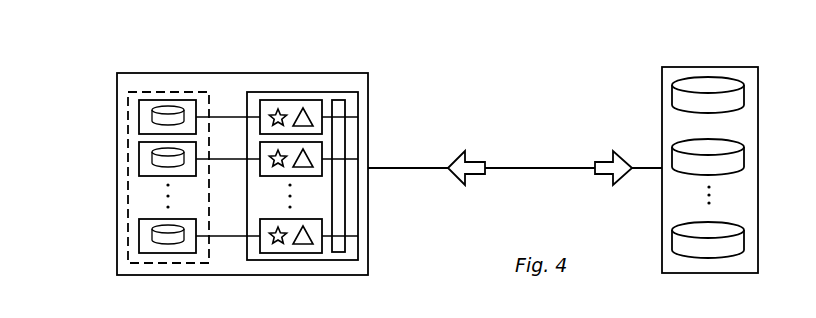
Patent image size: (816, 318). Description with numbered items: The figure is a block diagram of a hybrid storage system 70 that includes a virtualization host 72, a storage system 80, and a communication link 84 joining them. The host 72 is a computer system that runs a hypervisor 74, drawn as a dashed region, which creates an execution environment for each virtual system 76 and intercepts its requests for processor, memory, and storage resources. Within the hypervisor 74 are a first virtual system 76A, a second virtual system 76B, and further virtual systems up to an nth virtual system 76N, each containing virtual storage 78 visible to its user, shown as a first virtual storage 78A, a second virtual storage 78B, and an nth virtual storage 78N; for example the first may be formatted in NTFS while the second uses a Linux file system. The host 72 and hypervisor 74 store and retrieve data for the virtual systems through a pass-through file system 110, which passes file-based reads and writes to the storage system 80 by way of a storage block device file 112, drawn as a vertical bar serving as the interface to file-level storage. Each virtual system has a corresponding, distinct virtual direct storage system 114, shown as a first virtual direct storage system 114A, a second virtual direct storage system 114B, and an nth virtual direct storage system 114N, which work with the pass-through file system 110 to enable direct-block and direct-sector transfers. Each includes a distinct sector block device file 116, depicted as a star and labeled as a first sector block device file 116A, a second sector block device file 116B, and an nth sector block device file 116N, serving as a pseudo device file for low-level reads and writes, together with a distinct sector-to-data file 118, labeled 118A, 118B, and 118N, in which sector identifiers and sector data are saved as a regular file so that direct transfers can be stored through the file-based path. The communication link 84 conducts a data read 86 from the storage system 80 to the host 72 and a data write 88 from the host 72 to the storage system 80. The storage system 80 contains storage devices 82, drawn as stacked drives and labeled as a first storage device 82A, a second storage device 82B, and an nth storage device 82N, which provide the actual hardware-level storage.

The hybrid storage system 70 is at (94, 61).
The virtualization host 72 is at (161, 73).
The hypervisor 74 is at (167, 92).
The virtual system 76 is at (139, 102).
The first virtual system 76A is at (139, 113).
The second virtual system 76B is at (139, 145).
The nth virtual system 76N is at (139, 223).
The virtual storage 78 is at (150, 118).
The first virtual storage 78A is at (152, 126).
The second virtual storage 78B is at (155, 170).
The nth virtual storage 78N is at (152, 246).
The storage system 80 is at (662, 71).
The storage device 82 is at (673, 88).
The first storage device 82A is at (673, 116).
The second storage device 82B is at (673, 182).
The nth storage device 82N is at (673, 240).
The communication link 84 is at (543, 167).
The data read 86 is at (470, 162).
The data write 88 is at (608, 160).
The pass-through file system 110 is at (358, 98).
The storage block device file 112 is at (346, 112).
The virtual direct storage system 114 is at (312, 240).
The first virtual direct storage system 114A is at (312, 120).
The second virtual direct storage system 114B is at (312, 162).
The nth virtual direct storage system 114N is at (303, 235).
The sector block device file 116 is at (278, 246).
The first sector block device file 116A is at (284, 108).
The second sector block device file 116B is at (272, 152).
The nth sector block device file 116N is at (277, 235).
The sector-to-data file 118 is at (322, 252).
The first sector-to-data file 118A is at (322, 120).
The second sector-to-data file 118B is at (322, 160).
The nth sector-to-data file 118N is at (291, 236).